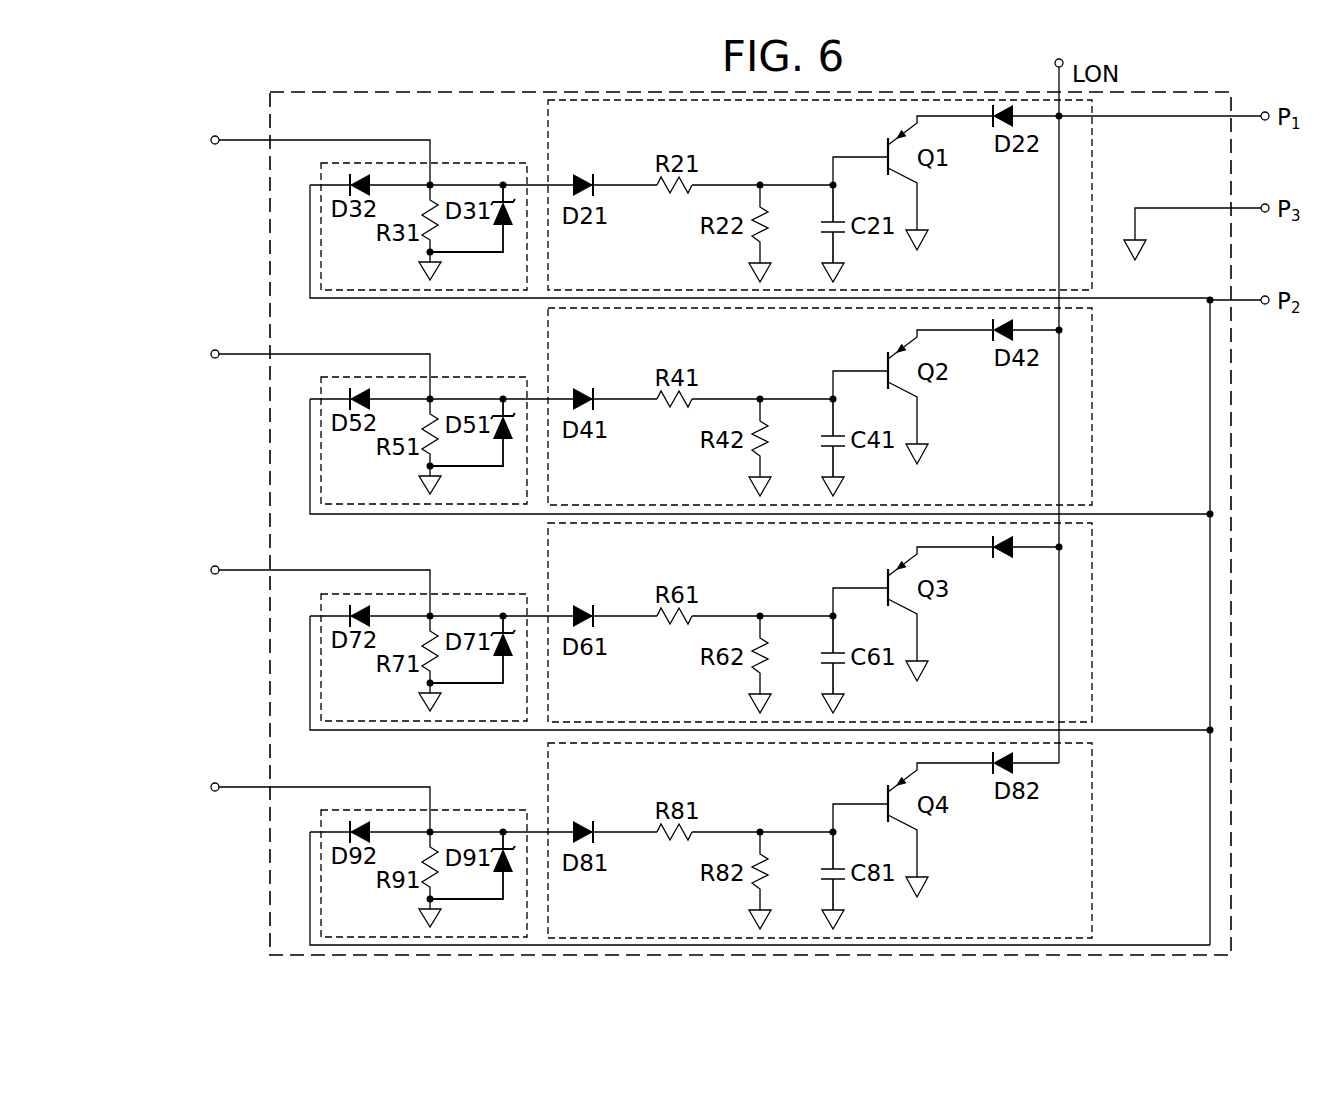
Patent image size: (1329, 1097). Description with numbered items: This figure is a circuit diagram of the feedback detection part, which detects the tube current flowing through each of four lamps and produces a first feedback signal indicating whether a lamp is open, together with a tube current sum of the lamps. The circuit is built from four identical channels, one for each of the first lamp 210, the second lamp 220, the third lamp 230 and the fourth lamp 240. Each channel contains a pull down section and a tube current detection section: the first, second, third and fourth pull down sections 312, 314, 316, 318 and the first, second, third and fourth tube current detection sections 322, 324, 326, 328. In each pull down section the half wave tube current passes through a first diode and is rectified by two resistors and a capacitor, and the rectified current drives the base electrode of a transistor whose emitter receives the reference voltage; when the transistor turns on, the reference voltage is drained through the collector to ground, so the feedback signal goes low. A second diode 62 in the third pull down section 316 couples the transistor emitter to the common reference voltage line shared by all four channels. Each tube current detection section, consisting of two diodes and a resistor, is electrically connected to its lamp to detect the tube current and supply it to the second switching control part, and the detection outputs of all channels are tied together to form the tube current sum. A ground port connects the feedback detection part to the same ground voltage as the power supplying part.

The first lamp 210 is at (295, 156).
The second lamp 220 is at (295, 370).
The third lamp 230 is at (295, 587).
The fourth lamp 240 is at (295, 803).
The first pull down section 312 is at (869, 195).
The second pull down section 314 is at (869, 406).
The third pull down section 316 is at (869, 622).
The fourth pull down section 318 is at (869, 840).
The first tube current detection section 322 is at (361, 226).
The second tube current detection section 324 is at (361, 440).
The third tube current detection section 326 is at (361, 657).
The fourth tube current detection section 328 is at (361, 873).
The second diode 62 is at (1004, 561).